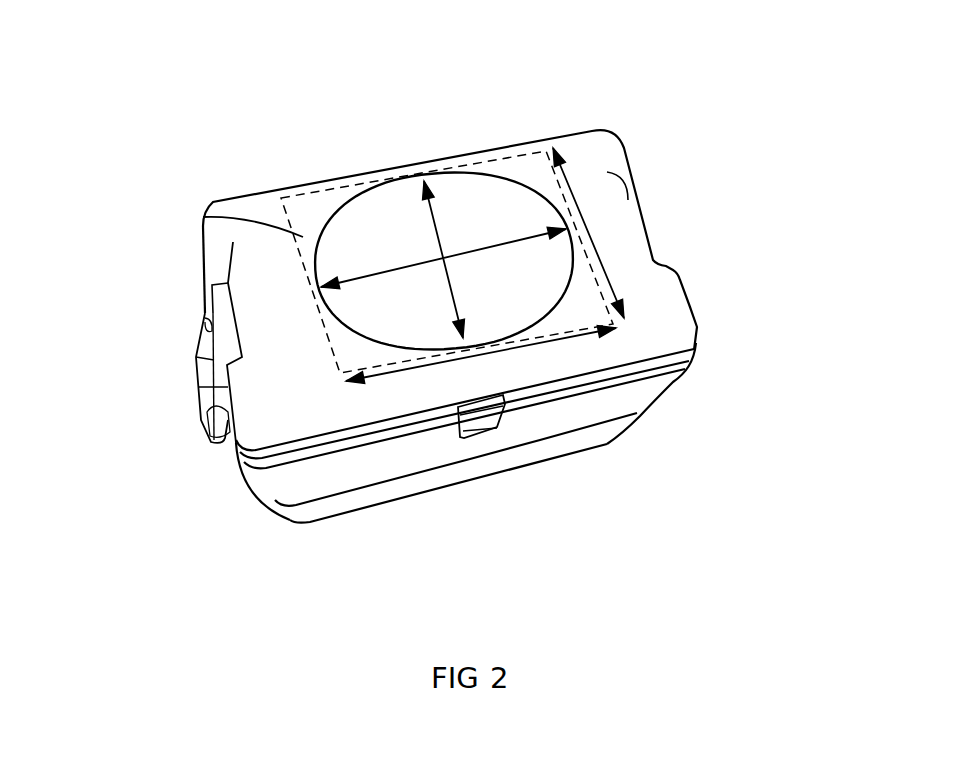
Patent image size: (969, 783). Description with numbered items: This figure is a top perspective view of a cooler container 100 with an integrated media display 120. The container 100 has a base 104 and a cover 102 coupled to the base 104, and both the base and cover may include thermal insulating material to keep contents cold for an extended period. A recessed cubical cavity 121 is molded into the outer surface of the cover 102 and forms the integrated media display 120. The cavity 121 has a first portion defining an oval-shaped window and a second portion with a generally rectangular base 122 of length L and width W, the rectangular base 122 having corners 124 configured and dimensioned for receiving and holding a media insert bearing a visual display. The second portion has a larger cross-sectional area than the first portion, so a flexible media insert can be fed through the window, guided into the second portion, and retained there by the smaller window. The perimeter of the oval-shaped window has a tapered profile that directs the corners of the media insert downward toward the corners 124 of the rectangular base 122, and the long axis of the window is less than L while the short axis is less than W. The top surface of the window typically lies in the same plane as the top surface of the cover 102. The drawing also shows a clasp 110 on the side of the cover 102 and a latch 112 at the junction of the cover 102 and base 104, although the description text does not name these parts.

The container 100 is at (318, 99).
The cover 102 is at (685, 288).
The base 104 is at (625, 431).
The hinge clasp 110 is at (207, 392).
The latch 112 is at (473, 438).
The integrated media display 120 is at (346, 212).
The recessed cubical cavity 121 is at (203, 216).
The rectangular base 122 is at (447, 170).
The corners 124 is at (281, 199).